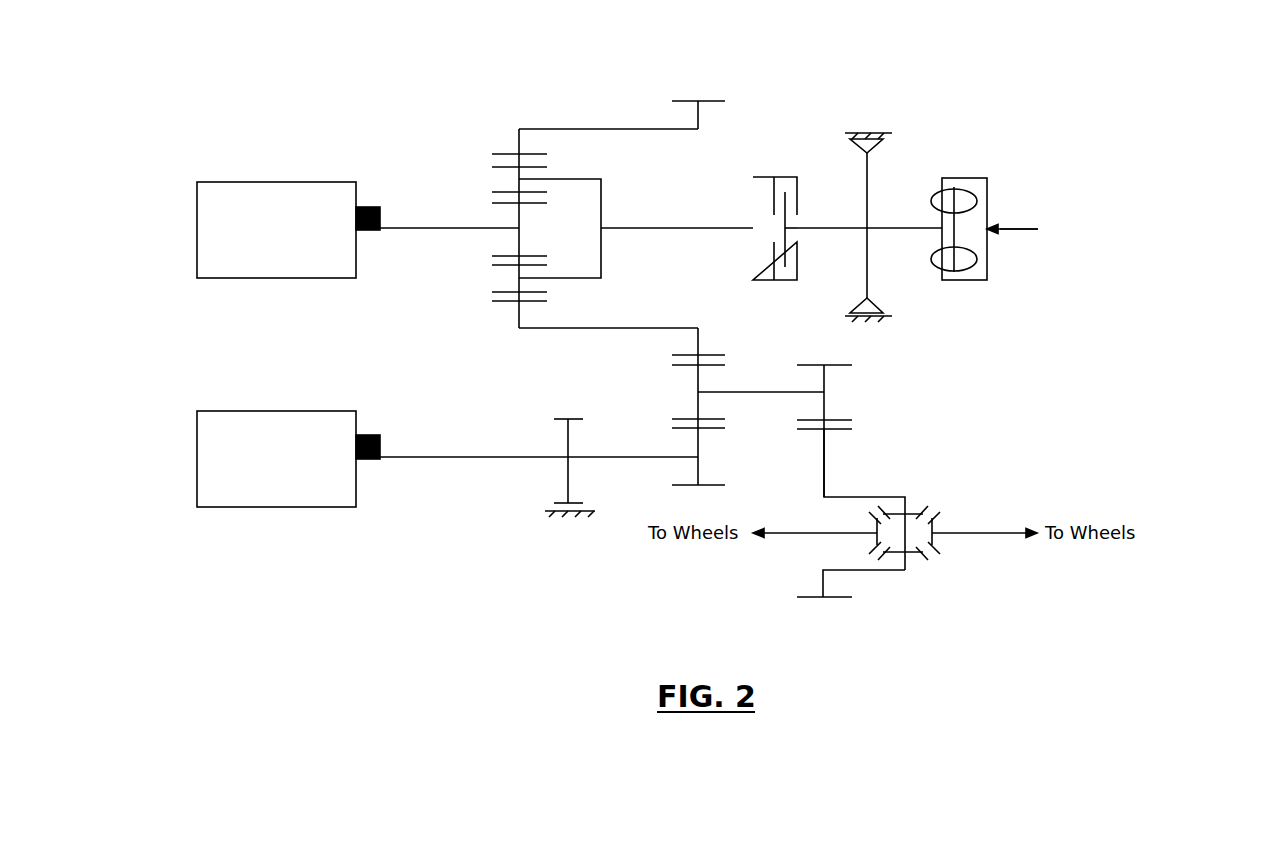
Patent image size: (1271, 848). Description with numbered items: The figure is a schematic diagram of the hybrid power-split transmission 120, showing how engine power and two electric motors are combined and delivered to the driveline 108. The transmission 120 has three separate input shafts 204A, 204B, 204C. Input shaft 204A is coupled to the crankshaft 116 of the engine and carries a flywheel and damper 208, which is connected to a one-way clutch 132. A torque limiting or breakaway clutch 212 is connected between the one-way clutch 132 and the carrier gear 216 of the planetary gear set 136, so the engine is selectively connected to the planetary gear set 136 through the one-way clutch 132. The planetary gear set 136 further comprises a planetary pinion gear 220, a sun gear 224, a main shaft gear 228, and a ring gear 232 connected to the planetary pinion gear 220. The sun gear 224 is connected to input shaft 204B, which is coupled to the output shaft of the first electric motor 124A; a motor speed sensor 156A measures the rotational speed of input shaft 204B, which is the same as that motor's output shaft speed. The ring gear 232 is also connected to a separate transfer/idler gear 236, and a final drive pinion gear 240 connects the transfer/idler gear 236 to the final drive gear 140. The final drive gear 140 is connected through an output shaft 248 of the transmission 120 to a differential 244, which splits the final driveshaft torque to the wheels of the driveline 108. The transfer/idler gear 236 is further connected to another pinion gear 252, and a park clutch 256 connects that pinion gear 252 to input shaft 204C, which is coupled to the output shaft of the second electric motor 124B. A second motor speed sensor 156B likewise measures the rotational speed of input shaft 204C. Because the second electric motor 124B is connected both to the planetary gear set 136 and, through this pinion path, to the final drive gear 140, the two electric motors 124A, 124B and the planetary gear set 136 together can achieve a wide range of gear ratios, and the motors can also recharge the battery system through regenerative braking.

The driveline 108 is at (1010, 449).
The crankshaft 116 is at (1117, 231).
The transmission 120 is at (382, 620).
The first electric motor 124A is at (278, 182).
The second electric motor 124B is at (277, 507).
The one-way clutch 132 is at (875, 100).
The planetary gear set 136 is at (482, 69).
The final drive gear 140 is at (826, 463).
The motor speed sensor 156A is at (367, 207).
The motor speed sensor 156B is at (366, 459).
The input shaft 204A is at (1020, 229).
The input shaft 204B is at (447, 228).
The input shaft 204C is at (447, 457).
The flywheel and damper 208 is at (964, 143).
The torque limiting or breakaway clutch 212 is at (776, 136).
The carrier gear 216 is at (601, 262).
The planetary pinion gear 220 is at (519, 179).
The sun gear 224 is at (519, 242).
The main shaft gear 228 is at (698, 130).
The ring gear 232 is at (519, 327).
The transfer/idler gear 236 is at (698, 381).
The final drive pinion gear 240 is at (826, 407).
The differential 244 is at (936, 576).
The output shaft 248 is at (882, 497).
The pinion gear 252 is at (698, 440).
The park clutch 256 is at (568, 472).